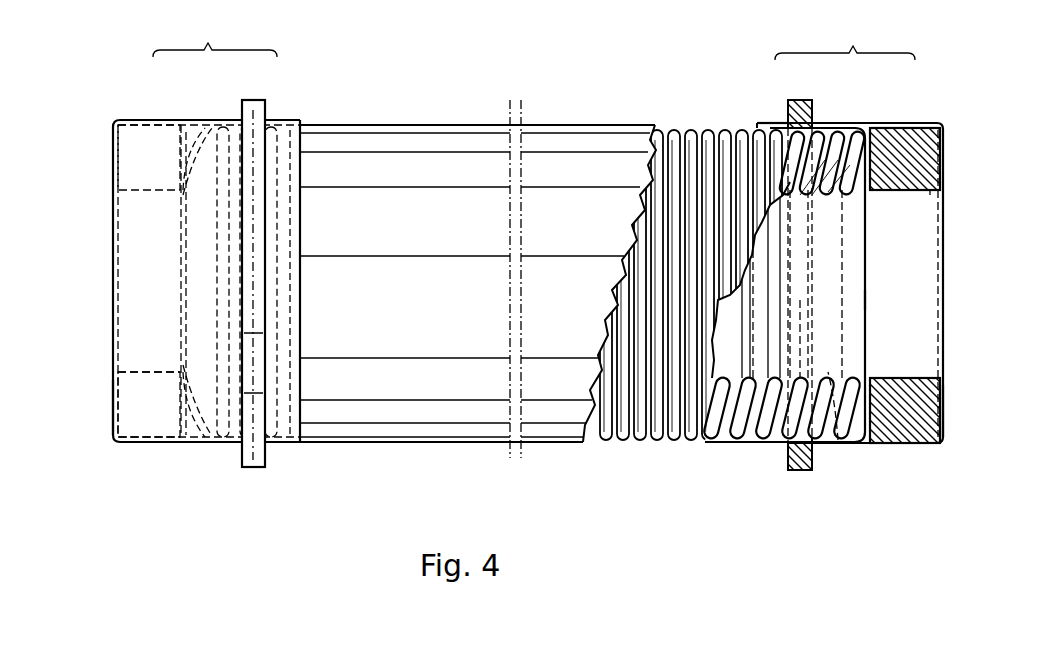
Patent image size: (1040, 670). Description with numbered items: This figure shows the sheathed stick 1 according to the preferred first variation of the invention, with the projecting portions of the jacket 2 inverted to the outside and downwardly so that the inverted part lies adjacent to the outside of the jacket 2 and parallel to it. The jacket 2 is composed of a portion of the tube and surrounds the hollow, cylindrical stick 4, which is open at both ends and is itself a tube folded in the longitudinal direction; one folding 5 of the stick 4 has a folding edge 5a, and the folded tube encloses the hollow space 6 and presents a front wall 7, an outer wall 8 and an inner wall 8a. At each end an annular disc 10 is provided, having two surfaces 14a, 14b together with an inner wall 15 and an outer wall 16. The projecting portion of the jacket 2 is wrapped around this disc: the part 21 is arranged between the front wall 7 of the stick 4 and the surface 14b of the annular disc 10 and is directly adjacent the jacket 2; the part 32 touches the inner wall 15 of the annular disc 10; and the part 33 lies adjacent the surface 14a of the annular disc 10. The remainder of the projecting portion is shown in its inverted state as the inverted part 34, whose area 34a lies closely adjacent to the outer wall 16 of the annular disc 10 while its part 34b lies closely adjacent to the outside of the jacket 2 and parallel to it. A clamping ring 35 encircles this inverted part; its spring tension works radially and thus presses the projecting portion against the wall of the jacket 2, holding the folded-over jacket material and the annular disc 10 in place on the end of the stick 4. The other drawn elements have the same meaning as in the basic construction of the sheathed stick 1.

The sheathed stick 1 is at (418, 124).
The jacket 2 is at (340, 133).
The hollow, cylindrical stick 4 is at (182, 262).
The folding of the stick 5 is at (762, 445).
The folding edge of the stick 5a is at (676, 445).
The hollow space of the stick 6 is at (830, 281).
The front wall of the stick 7 is at (185, 343).
The outer wall of the stick 8 is at (680, 127).
The inner wall of the stick 8a is at (814, 362).
The annular disc 10 is at (128, 156).
The surface of the annular disc 14a is at (113, 425).
The surface of the annular disc 14b is at (190, 432).
The inner wall of the annular disc 15 is at (934, 193).
The outer wall of the annular disc 16 is at (918, 126).
The part of the projecting portion 21 is at (190, 138).
The part of the projecting portion 32 is at (140, 370).
The part of the projecting portion 33 is at (112, 398).
The inverted part of the projecting portion 34 is at (534, 37).
The area of the inverted part 34a is at (152, 119).
The part of the inverted part 34b is at (286, 119).
The clamping ring 35 is at (255, 468).